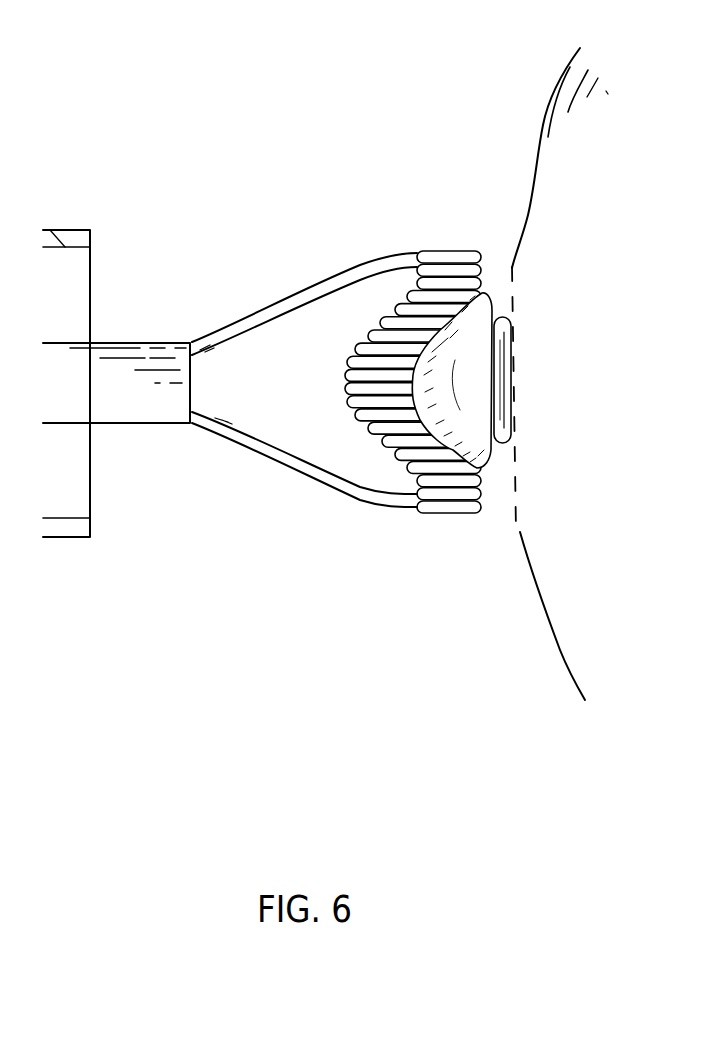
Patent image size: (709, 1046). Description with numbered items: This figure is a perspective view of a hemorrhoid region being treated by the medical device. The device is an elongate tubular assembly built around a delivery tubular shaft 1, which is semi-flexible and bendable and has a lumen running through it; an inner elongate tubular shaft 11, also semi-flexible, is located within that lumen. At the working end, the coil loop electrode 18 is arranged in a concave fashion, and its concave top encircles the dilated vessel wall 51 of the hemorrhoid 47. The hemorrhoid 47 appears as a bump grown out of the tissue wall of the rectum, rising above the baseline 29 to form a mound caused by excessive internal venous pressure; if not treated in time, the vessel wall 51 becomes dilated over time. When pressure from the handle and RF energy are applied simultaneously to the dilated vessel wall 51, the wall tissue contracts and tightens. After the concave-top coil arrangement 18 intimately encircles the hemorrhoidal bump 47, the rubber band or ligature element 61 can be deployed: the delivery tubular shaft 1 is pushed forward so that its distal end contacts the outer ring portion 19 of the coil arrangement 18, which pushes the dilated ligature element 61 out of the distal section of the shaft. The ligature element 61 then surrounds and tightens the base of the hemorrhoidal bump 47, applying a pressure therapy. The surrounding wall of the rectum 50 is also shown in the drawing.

The delivery tubular shaft 1 is at (67, 220).
The inner elongate tubular shaft 11 is at (148, 333).
The outer ring portion 19 is at (378, 257).
The coil loop electrode 18 is at (447, 242).
The vessel wall 51 is at (492, 300).
The hemorrhoid 47 is at (470, 390).
The ligature element 61 is at (505, 405).
The baseline 29 is at (523, 480).
The lumen wall 50 is at (607, 655).